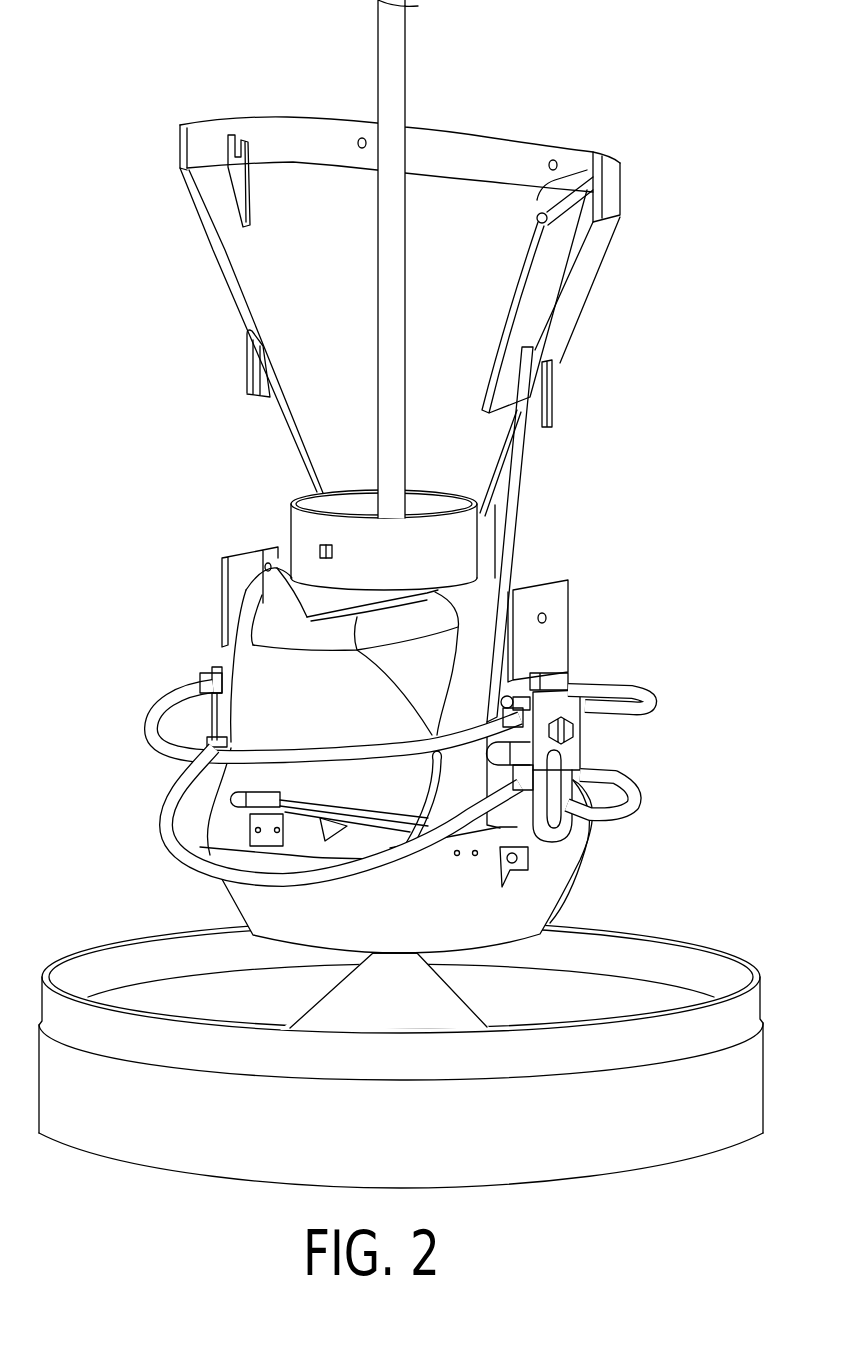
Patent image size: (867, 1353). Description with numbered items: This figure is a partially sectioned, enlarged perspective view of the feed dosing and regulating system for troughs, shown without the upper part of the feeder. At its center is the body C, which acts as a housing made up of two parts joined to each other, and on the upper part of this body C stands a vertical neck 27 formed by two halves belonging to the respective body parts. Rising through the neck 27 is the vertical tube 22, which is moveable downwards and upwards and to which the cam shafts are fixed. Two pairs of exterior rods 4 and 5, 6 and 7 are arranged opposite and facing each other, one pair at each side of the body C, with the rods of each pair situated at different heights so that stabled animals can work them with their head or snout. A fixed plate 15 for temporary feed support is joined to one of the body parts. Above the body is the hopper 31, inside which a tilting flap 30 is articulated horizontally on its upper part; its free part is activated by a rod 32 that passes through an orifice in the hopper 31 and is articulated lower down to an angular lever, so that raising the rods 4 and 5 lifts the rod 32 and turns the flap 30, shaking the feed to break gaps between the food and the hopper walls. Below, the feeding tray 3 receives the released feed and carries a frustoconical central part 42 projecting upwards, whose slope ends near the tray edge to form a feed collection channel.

The feeding tray 3 is at (745, 1087).
The exterior rod 4 is at (640, 700).
The exterior rod 5 is at (630, 803).
The exterior rod 6 is at (148, 730).
The exterior rod 7 is at (173, 847).
The fixed plate 15 is at (232, 788).
The vertical tube 22 is at (395, 70).
The vertical neck 27 is at (282, 510).
The tilting flap 30 is at (550, 262).
The hopper 31 is at (236, 252).
The rod 32 is at (517, 470).
The central part 42 is at (327, 1017).
The body C is at (245, 668).